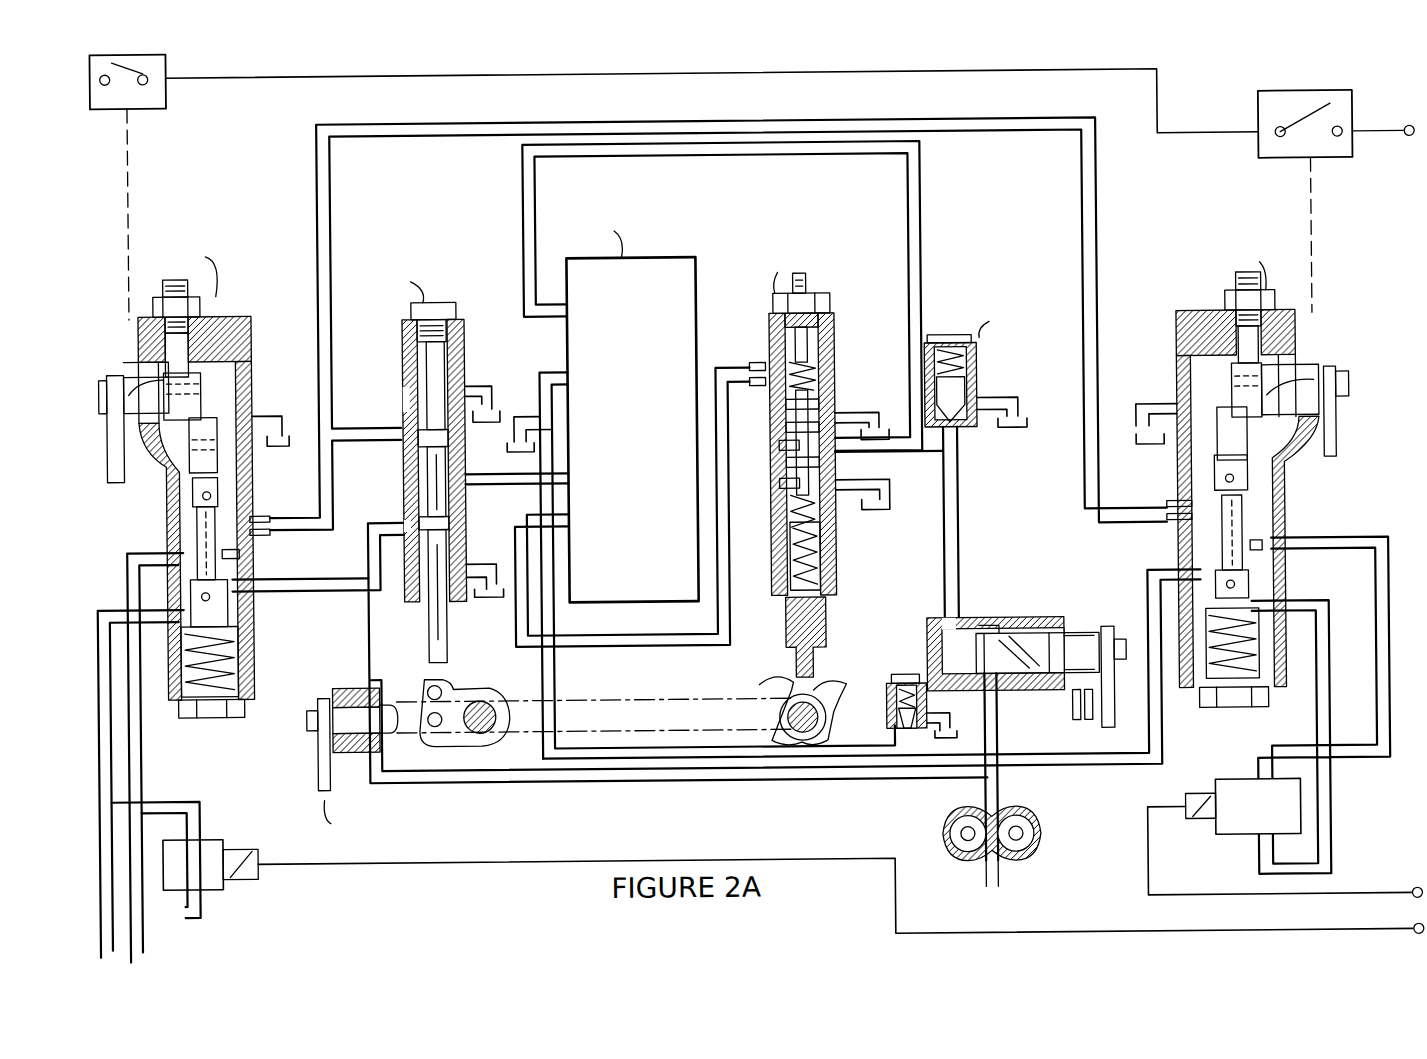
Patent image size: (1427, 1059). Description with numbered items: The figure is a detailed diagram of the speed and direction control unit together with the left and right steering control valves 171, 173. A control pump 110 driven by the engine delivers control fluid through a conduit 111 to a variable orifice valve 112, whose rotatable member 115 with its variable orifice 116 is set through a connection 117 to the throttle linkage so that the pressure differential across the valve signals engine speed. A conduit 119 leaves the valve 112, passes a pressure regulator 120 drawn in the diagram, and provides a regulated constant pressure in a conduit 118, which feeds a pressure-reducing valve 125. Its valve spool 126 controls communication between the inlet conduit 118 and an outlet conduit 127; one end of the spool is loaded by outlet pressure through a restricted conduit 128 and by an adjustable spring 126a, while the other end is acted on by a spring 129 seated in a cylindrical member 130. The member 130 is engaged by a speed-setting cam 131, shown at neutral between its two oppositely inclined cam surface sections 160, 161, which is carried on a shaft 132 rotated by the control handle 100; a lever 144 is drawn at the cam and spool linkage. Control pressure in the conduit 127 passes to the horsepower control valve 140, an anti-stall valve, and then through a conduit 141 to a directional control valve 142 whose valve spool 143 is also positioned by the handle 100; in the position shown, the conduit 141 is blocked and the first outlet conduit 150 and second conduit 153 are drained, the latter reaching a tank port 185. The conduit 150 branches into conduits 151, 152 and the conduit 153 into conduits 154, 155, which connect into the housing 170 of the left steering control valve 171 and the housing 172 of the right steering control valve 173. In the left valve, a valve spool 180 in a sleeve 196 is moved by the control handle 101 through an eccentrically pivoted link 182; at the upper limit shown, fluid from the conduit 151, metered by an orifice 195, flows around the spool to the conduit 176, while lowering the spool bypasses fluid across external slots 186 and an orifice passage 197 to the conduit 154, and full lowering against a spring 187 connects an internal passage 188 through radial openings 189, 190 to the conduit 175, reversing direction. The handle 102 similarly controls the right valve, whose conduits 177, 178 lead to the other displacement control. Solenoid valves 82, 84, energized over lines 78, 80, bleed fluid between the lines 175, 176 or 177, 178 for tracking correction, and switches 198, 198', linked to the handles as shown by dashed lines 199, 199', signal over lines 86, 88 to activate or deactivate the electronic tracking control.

The switch 198 is at (149, 70).
The switch 198' is at (1333, 117).
The line 86 is at (230, 73).
The line 88 is at (1385, 133).
The dashed line 199 is at (156, 215).
The dashed line 199' is at (1342, 235).
The left steering control valve 171 is at (250, 318).
The right steering control valve 173 is at (1178, 317).
The housing 172 is at (1180, 352).
The control handle 101 is at (118, 470).
The control handle 102 is at (1338, 436).
The eccentrically pivoted link 182 is at (206, 398).
The housing 170 is at (254, 408).
The valve spool 180 is at (218, 482).
The radial opening 189 is at (213, 497).
The internal passage 188 is at (202, 540).
The orifice 195 is at (270, 518).
The external slots 186 is at (242, 556).
The orifice passage 197 is at (233, 588).
The radial opening 190 is at (210, 603).
The sleeve 196 is at (243, 642).
The spring 187 is at (214, 692).
The conduit 176 is at (142, 744).
The conduit 175 is at (112, 784).
The solenoid valve 82 is at (212, 840).
The solenoid valve 84 is at (1248, 836).
The line 80 is at (1204, 898).
The line 78 is at (1160, 935).
The control handle 100 is at (318, 760).
The shaft 132 is at (386, 740).
The lever 144 is at (462, 688).
The valve spool 143 is at (447, 628).
The tank port 185 is at (496, 586).
The branch conduit 154 is at (343, 575).
The second conduit 153 is at (395, 520).
The branch conduit 151 is at (330, 472).
The first outlet conduit 150 is at (392, 428).
The branch conduit 152 is at (1103, 166).
The directional control valve 142 is at (472, 332).
The conduit 141 is at (514, 482).
The horsepower control valve 140 is at (690, 257).
The outlet conduit 127 is at (672, 645).
The conduit 128 is at (728, 366).
The valve spool 126 is at (780, 442).
The adjustable spring 126a is at (830, 370).
The conduit 118 is at (888, 452).
The pressure-reducing valve 125 is at (830, 532).
The spring 129 is at (826, 567).
The cylindrical member 130 is at (826, 612).
The cam surface section 160 is at (780, 678).
The cam surface section 161 is at (822, 680).
The speed-setting cam 131 is at (826, 708).
The branch conduit 155 is at (604, 780).
The control pump 110 is at (935, 830).
The conduit 111 is at (998, 747).
The variable orifice valve 112 is at (978, 617).
The rotatable member 115 is at (1068, 626).
The variable orifice 116 is at (988, 690).
The connection 117 is at (1104, 724).
The conduit 119 is at (958, 494).
The pressure regulator 120 is at (978, 364).
The conduit 177 is at (1316, 540).
The conduit 178 is at (1292, 603).